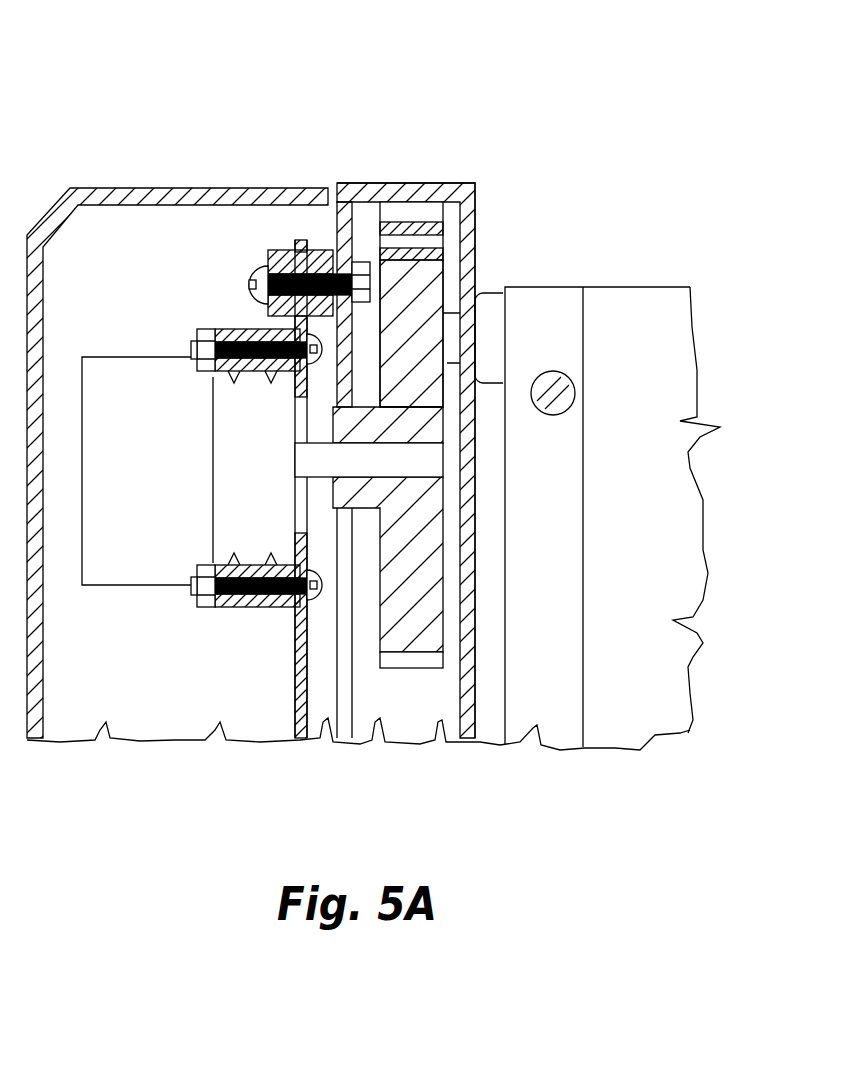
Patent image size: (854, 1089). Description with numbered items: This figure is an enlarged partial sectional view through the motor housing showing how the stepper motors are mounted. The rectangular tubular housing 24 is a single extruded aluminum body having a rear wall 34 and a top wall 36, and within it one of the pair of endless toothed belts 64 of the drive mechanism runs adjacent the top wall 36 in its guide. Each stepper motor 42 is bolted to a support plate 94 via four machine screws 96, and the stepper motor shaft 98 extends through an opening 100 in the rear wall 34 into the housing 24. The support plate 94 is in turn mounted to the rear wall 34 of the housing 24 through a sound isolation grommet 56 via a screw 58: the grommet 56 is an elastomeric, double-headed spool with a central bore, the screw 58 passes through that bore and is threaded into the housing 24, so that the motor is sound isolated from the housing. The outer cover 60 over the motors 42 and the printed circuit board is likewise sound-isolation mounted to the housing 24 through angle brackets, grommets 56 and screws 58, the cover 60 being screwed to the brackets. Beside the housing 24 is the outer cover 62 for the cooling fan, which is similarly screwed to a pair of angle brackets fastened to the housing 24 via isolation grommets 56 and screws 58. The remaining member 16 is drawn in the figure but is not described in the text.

The mounting block 16 is at (445, 595).
The rectangular tubular housing 24 is at (395, 176).
The rear wall 34 is at (362, 223).
The top wall 36 is at (473, 210).
The stepper motor 42 is at (140, 357).
The sound isolation grommet 56 is at (272, 252).
The screw 58 is at (252, 278).
The outer cover 60 is at (118, 187).
The outer cover 62 is at (647, 286).
The endless toothed belt 64 is at (437, 250).
The support plate 94 is at (297, 637).
The machine screw 96 is at (197, 603).
The stepper motor shaft 98 is at (297, 454).
The opening 100 is at (357, 372).